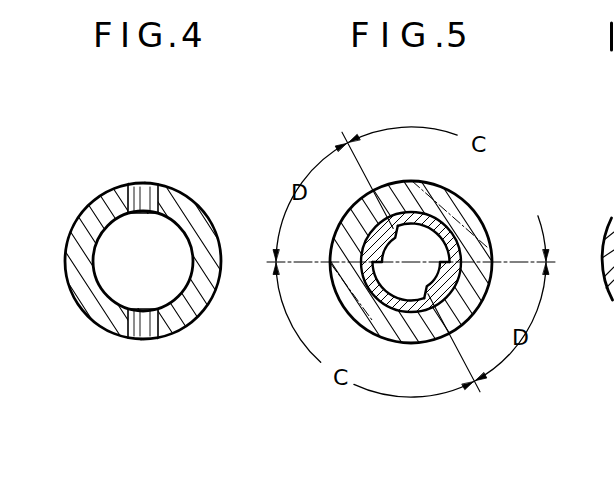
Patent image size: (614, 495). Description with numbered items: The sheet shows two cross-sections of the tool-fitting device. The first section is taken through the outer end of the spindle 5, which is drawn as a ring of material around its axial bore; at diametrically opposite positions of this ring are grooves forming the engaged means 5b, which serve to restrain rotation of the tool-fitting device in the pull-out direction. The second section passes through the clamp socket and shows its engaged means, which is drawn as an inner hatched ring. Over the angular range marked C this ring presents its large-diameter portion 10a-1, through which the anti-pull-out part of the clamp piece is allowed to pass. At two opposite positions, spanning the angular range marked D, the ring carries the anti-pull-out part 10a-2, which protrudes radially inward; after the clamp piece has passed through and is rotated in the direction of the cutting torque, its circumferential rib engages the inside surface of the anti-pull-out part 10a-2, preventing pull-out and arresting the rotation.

In FIG. 4, the spindle 5 is at (93, 222).
In FIG. 4, the engaged means 5b is at (140, 185).
In FIG. 5, the large-diameter portion 10a-1 is at (433, 242).
In FIG. 5, the anti-pull-out part 10a-2 is at (392, 232).